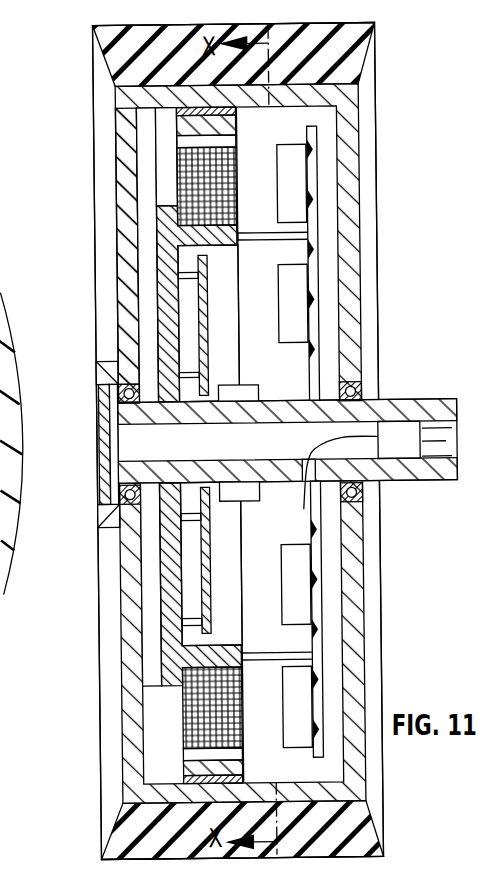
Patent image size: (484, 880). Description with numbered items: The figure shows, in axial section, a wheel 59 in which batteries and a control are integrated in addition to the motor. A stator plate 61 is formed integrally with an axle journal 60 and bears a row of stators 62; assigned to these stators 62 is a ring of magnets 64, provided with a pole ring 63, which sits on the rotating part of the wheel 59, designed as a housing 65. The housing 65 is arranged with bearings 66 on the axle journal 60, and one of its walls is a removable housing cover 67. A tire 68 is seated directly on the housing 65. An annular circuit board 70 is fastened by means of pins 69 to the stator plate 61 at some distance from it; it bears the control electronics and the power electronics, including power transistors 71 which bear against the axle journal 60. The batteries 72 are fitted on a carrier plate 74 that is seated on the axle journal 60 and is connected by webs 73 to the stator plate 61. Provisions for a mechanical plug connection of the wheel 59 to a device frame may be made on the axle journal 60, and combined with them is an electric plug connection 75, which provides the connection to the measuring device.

The wheel 59 is at (93, 170).
The axle journal 60 is at (433, 403).
The stator plate 61 is at (164, 209).
The stators 62 is at (225, 448).
The pole ring 63 is at (241, 110).
The ring of magnets 64 is at (237, 123).
The housing 65 is at (350, 154).
The bearings 66 is at (101, 366).
The housing cover 67 is at (122, 251).
The tire 68 is at (352, 59).
The pins 69 is at (189, 366).
The annular circuit board 70 is at (223, 448).
The power transistors 71 is at (234, 384).
The batteries 72 is at (305, 200).
The webs 73 is at (270, 240).
The carrier plate 74 is at (313, 363).
The electric plug connection 75 is at (405, 452).